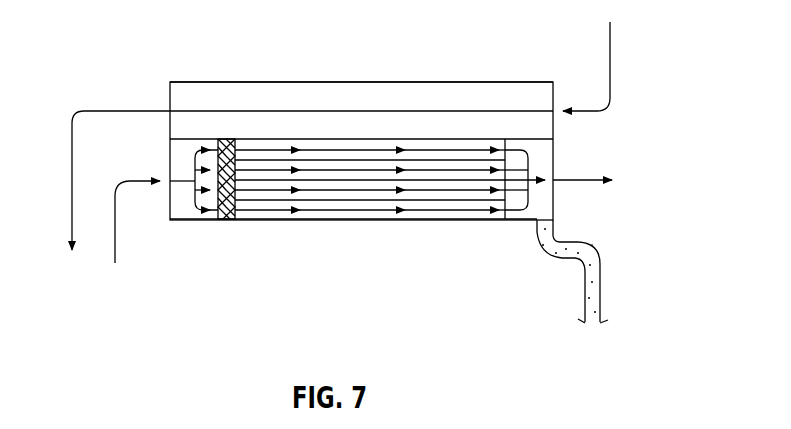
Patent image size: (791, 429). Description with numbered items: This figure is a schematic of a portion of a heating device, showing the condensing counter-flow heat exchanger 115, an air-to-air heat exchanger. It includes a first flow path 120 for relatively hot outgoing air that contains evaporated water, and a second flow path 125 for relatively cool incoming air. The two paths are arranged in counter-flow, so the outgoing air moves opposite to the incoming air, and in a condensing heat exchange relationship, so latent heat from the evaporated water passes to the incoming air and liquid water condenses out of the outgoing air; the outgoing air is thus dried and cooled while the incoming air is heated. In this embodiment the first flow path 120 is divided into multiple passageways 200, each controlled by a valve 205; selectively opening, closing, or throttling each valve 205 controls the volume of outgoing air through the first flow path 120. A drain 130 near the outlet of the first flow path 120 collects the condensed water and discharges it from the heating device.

The condensing counter-flow heat exchanger 115 is at (170, 93).
The second flow path 125 is at (362, 82).
The first flow path 120 is at (372, 222).
The passageways 200 is at (289, 210).
The valve 205 is at (226, 221).
The drain 130 is at (603, 298).